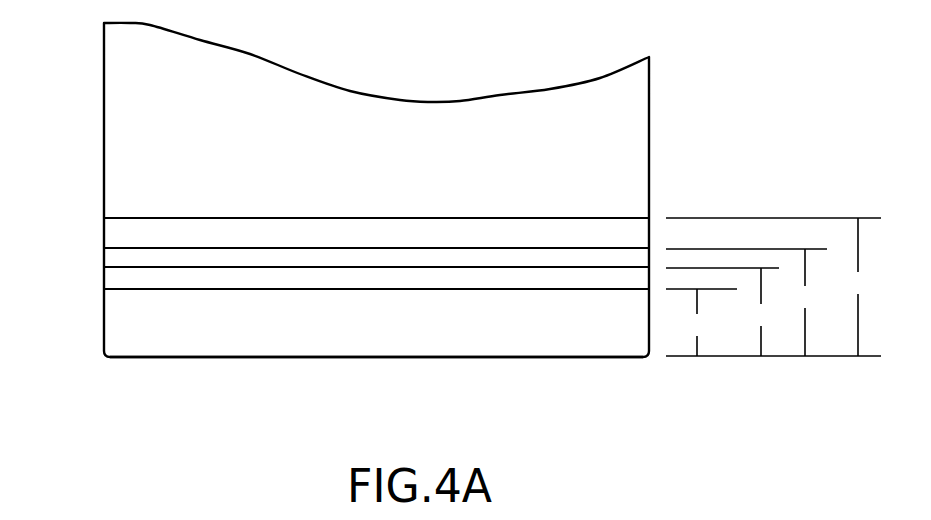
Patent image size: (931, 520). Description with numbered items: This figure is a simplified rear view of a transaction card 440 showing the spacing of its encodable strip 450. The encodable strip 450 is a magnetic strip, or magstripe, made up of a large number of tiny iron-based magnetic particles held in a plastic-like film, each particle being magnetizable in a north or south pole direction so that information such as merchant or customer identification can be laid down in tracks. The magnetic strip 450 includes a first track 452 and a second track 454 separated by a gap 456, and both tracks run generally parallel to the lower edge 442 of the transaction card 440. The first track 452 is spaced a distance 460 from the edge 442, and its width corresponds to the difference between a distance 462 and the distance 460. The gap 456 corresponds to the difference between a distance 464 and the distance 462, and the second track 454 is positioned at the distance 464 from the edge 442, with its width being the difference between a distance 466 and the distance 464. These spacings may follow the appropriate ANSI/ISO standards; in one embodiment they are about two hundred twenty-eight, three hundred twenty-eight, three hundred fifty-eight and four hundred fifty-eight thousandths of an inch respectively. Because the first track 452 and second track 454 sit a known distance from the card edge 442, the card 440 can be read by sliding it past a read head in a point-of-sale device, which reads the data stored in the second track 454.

The transaction card 440 is at (628, 148).
The lower edge 442 is at (578, 357).
The encodable strip 450 is at (92, 218).
The first track 452 is at (205, 276).
The second track 454 is at (189, 228).
The gap 456 is at (298, 257).
The distance 460 is at (701, 322).
The distance 462 is at (722, 312).
The distance 464 is at (746, 302).
The distance 466 is at (773, 287).